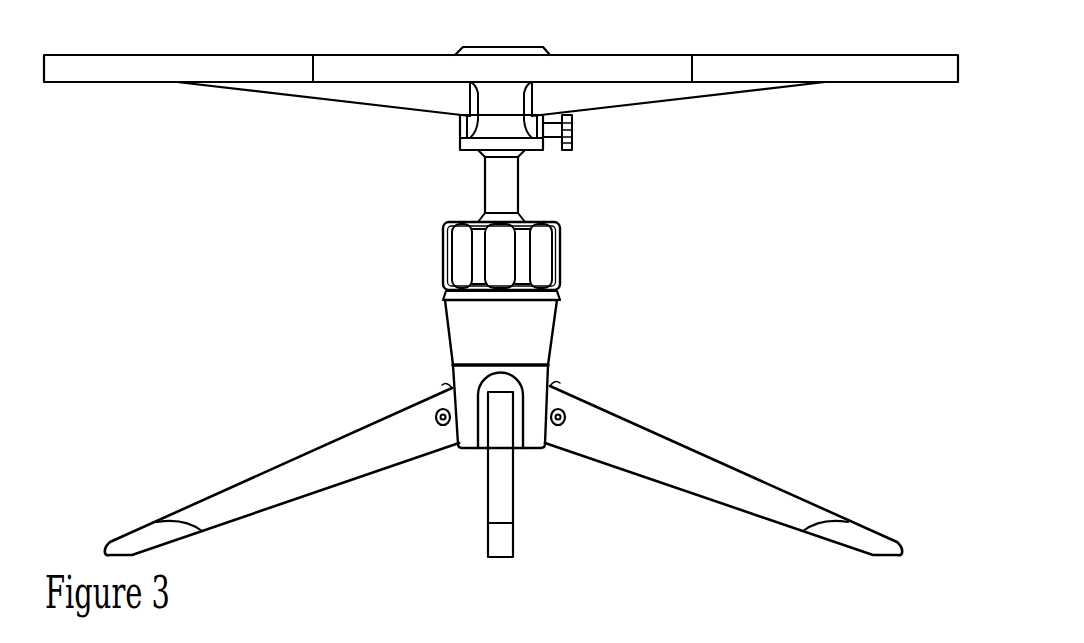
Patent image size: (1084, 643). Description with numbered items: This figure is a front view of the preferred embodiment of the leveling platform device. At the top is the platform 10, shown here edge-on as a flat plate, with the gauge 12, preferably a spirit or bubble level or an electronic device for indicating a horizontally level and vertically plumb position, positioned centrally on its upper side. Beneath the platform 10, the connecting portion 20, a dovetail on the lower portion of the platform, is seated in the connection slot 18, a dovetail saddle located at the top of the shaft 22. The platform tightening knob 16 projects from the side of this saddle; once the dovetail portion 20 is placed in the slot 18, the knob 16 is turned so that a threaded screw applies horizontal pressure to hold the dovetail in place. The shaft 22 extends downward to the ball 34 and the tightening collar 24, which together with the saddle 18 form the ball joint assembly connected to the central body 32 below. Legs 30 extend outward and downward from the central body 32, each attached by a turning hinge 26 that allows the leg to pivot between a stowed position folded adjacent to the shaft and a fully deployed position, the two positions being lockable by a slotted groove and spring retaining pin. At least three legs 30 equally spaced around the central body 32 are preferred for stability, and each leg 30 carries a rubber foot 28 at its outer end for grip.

The platform 10 is at (722, 65).
The gauge 12 is at (527, 53).
The platform tightening knob 16 is at (573, 130).
The connection slot 18 is at (520, 146).
The connecting portion 20 is at (493, 122).
The shaft 22 is at (493, 186).
The tightening collar 24 is at (448, 262).
The turning hinges 26 is at (437, 412).
The rubber feet 28 is at (177, 535).
The legs 30 is at (353, 442).
The central body 32 is at (455, 345).
The ball 34 is at (523, 220).